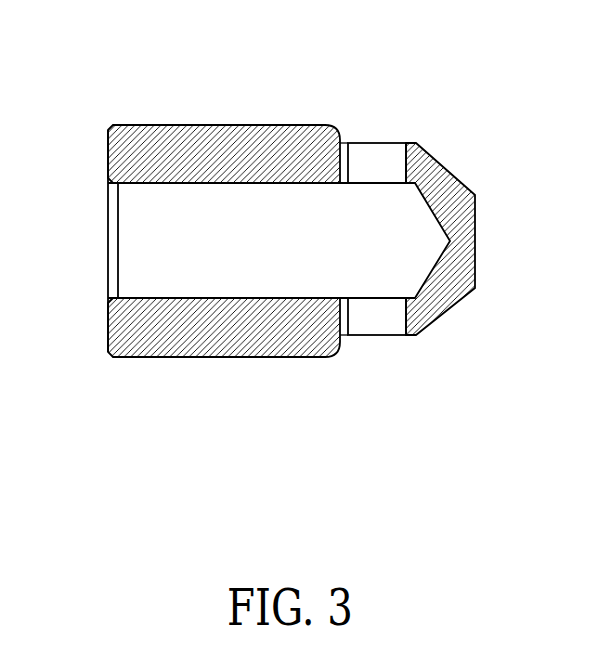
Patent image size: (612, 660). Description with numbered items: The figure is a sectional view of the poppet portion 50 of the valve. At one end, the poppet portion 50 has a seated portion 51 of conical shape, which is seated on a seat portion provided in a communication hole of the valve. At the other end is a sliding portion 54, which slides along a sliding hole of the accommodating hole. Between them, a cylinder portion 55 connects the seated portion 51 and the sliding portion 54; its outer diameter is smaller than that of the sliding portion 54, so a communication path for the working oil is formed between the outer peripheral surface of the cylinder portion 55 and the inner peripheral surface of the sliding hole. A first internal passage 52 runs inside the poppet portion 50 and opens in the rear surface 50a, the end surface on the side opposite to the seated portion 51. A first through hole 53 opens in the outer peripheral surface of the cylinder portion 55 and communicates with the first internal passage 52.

The poppet portion 50 is at (110, 124).
The rear surface 50a is at (108, 327).
The seated portion 51 is at (442, 172).
The first internal passage 52 is at (227, 298).
The first through hole 53 is at (350, 317).
The sliding portion 54 is at (235, 125).
The cylinder portion 55 is at (350, 143).